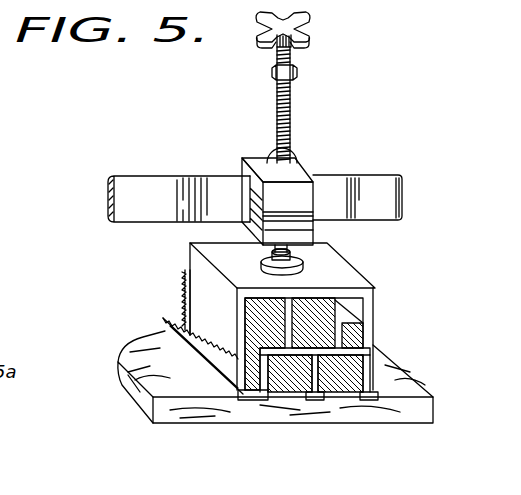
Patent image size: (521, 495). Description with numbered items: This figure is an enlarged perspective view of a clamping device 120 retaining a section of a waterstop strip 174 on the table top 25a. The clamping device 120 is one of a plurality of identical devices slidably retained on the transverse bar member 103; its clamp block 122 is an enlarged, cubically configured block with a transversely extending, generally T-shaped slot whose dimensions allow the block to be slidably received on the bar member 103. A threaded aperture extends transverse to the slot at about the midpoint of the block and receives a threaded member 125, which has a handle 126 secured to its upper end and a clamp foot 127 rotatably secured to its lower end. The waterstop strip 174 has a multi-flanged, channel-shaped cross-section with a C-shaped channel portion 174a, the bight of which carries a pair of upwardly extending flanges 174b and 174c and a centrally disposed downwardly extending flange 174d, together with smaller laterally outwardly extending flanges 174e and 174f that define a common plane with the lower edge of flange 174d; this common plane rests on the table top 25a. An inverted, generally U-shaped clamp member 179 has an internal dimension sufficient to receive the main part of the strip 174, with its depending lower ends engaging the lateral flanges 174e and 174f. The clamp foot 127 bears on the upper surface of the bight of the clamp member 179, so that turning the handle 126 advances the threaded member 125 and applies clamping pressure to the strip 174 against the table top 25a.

The handle 126 is at (300, 30).
The threaded member 125 is at (291, 128).
The clamping device 120 is at (257, 139).
The transverse bar member 103 is at (160, 184).
The clamp block 122 is at (313, 230).
The clamp foot 127 is at (263, 262).
The clamp member 179 is at (352, 272).
The waterstop strip 174 is at (168, 321).
The C-shaped channel portion 174a is at (363, 343).
The upwardly extending flange 174b is at (290, 321).
The upwardly extending flange 174c is at (340, 328).
The downwardly extending flange 174d is at (311, 403).
The laterally outwardly extending flange 174e is at (256, 405).
The laterally outwardly extending flange 174f is at (369, 402).
The table top 25a is at (128, 352).